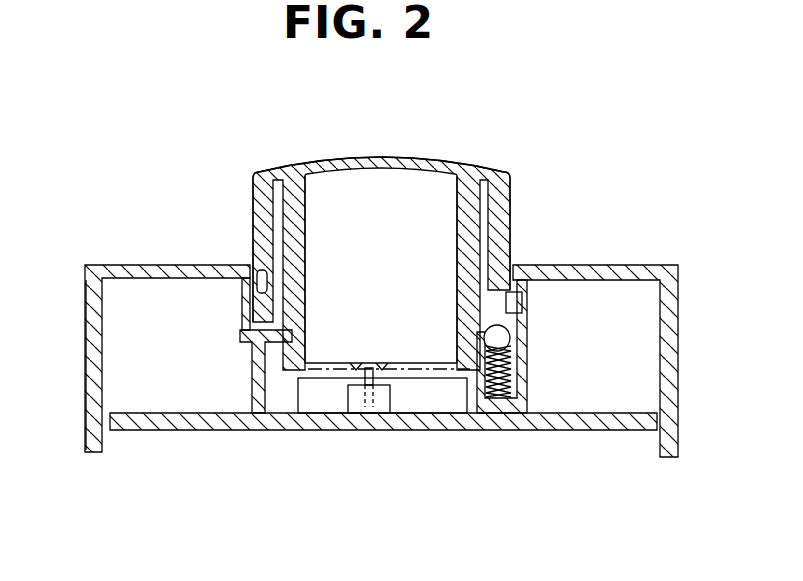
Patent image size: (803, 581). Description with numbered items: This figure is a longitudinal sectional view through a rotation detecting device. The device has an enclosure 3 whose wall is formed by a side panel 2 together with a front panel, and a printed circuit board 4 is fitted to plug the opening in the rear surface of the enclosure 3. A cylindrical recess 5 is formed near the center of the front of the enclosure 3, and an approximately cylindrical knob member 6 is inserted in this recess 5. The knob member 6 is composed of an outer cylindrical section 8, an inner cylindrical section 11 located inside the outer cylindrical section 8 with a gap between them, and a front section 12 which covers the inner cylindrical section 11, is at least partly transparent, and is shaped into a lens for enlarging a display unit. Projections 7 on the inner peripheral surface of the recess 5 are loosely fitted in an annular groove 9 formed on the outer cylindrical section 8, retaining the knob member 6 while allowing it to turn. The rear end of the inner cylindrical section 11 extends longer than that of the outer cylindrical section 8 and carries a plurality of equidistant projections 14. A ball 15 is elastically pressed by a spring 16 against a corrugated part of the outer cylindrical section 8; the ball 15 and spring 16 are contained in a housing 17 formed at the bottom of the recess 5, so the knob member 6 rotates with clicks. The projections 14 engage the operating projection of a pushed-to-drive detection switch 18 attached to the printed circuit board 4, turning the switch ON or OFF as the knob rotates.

The side panel 2 is at (96, 383).
The enclosure 3 is at (132, 264).
The printed circuit board 4 is at (630, 430).
The cylindrical recess 5 is at (517, 273).
The knob member 6 is at (411, 226).
The projections 7 is at (255, 308).
The outer cylindrical section 8 is at (511, 205).
The annular groove 9 is at (263, 290).
The inner cylindrical section 11 is at (457, 260).
The front section 12 is at (405, 155).
The projections 14 is at (352, 373).
The ball 15 is at (523, 350).
The spring 16 is at (503, 397).
The housing 17 is at (527, 387).
The pushed-to-drive detection switch 18 is at (358, 407).